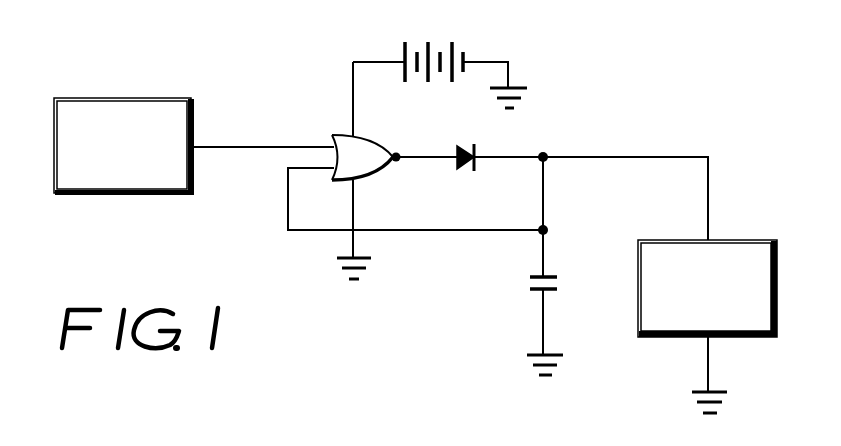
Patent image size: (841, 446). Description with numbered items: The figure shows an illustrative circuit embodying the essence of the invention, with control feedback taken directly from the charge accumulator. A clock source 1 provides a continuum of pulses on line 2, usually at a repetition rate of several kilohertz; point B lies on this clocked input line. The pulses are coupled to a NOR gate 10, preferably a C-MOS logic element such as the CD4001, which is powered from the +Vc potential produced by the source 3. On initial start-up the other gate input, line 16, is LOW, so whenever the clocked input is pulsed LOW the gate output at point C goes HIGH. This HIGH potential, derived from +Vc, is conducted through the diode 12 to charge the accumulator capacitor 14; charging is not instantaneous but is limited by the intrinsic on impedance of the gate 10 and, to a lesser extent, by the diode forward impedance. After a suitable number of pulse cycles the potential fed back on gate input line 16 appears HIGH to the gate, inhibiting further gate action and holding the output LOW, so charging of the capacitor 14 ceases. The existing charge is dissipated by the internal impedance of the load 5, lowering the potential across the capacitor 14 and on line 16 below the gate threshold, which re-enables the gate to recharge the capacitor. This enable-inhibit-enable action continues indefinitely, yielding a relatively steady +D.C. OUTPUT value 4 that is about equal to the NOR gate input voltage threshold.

The clock source 1 is at (155, 110).
The line 2 is at (266, 143).
The point B is at (240, 148).
The NOR gate 10 is at (378, 154).
The point C is at (418, 156).
The source 3 is at (455, 51).
The diode 12 is at (469, 171).
The +D.C. OUTPUT value 4 is at (686, 156).
The gate input line 16 is at (437, 232).
The accumulator capacitor 14 is at (537, 290).
The load 5 is at (757, 246).